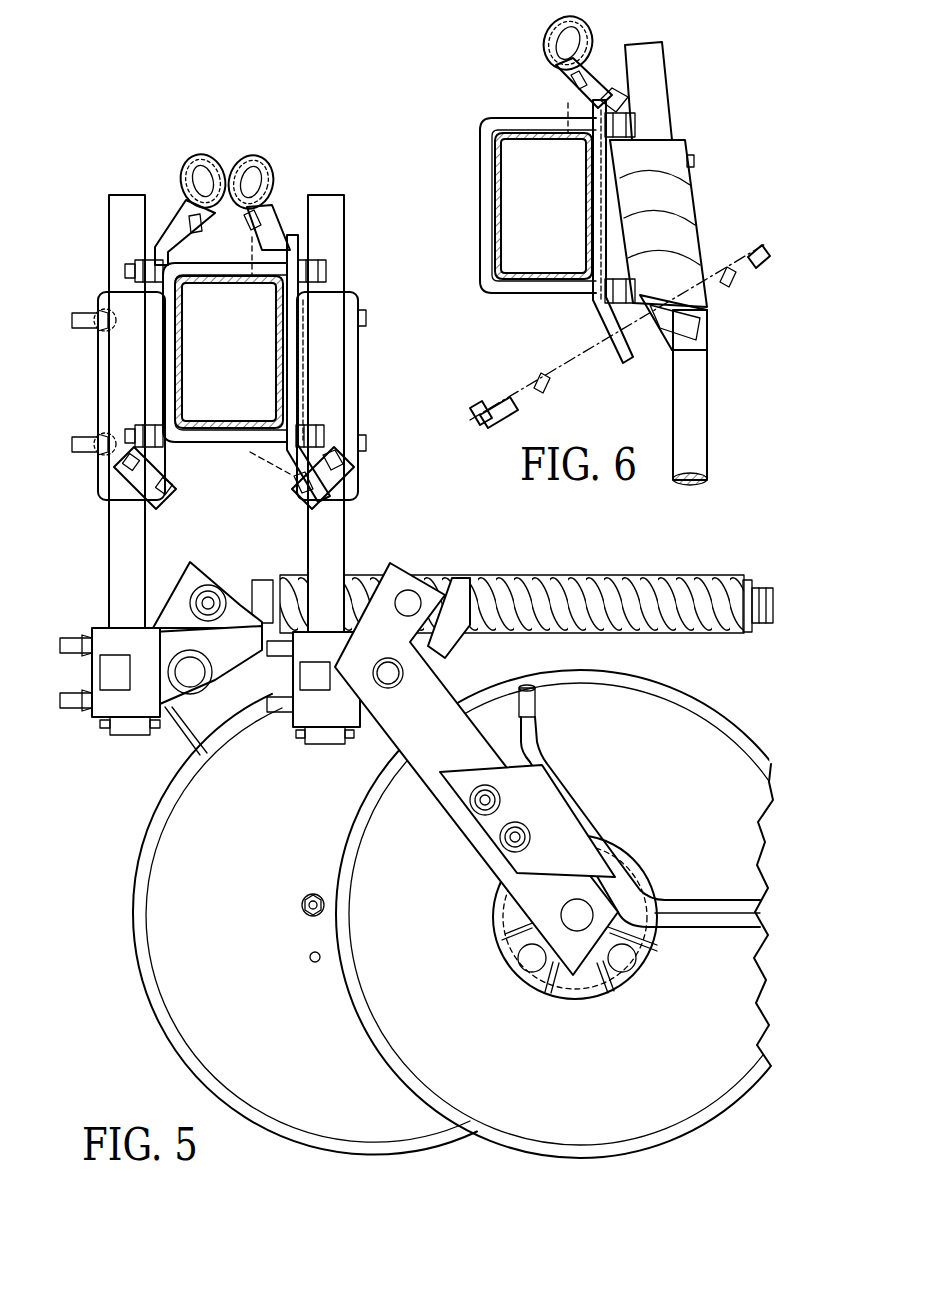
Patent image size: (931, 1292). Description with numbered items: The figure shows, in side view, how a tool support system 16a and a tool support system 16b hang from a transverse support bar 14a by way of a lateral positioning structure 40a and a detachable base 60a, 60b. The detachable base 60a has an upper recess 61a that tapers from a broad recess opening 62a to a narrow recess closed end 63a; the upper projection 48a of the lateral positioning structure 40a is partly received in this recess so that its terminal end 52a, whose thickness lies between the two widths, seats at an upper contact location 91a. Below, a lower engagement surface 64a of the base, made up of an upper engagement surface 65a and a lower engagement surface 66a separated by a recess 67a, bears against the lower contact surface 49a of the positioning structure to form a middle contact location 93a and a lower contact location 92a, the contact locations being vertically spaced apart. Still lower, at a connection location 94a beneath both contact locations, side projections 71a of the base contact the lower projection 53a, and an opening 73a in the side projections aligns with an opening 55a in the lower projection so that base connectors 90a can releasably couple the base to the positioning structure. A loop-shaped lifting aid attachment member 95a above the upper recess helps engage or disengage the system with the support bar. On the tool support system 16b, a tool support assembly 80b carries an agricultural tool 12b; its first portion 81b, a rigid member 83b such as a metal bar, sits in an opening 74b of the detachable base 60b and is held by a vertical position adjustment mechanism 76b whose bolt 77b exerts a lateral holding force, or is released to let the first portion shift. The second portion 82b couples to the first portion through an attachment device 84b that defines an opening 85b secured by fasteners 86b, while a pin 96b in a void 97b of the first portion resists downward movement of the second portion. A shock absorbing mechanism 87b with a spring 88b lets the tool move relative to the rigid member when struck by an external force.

In FIG. 5, the agricultural tool 12b is at (133, 930).
In FIG. 5, the transverse support bar 14a is at (217, 441).
In FIG. 6, the transverse support bar 14a is at (510, 294).
In FIG. 5, the tool support system 16a is at (368, 290).
In FIG. 5, the tool support system 16b is at (105, 205).
In FIG. 5, the lateral positioning structure 40a is at (248, 457).
In FIG. 6, the lateral positioning structure 40a is at (560, 101).
In FIG. 5, the upper projection 48a is at (290, 247).
In FIG. 6, the upper projection 48a is at (614, 105).
In FIG. 5, the lower contact surface 49a is at (285, 387).
In FIG. 5, the terminal end 52a is at (250, 170).
In FIG. 5, the lower projection 53a is at (285, 458).
In FIG. 6, the lower projection 53a is at (600, 310).
In FIG. 5, the opening 55a is at (310, 505).
In FIG. 6, the opening 55a is at (612, 340).
In FIG. 5, the detachable base 60a is at (366, 324).
In FIG. 6, the detachable base 60a is at (690, 158).
In FIG. 5, the detachable base 60b is at (99, 306).
In FIG. 5, the upper recess 61a is at (292, 250).
In FIG. 6, the upper recess 61a is at (628, 110).
In FIG. 5, the recess opening 62a is at (273, 237).
In FIG. 6, the recess opening 62a is at (620, 75).
In FIG. 5, the recess closed end 63a is at (262, 217).
In FIG. 6, the recess closed end 63a is at (575, 73).
In FIG. 5, the lower engagement surface 64a is at (292, 370).
In FIG. 6, the lower engagement surface 64a is at (626, 217).
In FIG. 5, the upper engagement surface 65a is at (300, 303).
In FIG. 6, the upper engagement surface 65a is at (655, 152).
In FIG. 5, the lower engagement surface 66a is at (298, 415).
In FIG. 6, the lower engagement surface 66a is at (630, 240).
In FIG. 5, the recess 67a is at (298, 350).
In FIG. 6, the recess 67a is at (622, 180).
In FIG. 5, the side projections 71a is at (345, 503).
In FIG. 6, the side projections 71a is at (699, 338).
In FIG. 5, the opening 73a is at (338, 490).
In FIG. 6, the opening 73a is at (689, 310).
In FIG. 5, the opening 74b is at (107, 512).
In FIG. 5, the vertical position adjustment mechanism 76b is at (105, 332).
In FIG. 5, the bolt 77b is at (93, 323).
In FIG. 5, the tool support assembly 80b is at (95, 600).
In FIG. 5, the first portion 81b is at (95, 540).
In FIG. 5, the second portion 82b is at (100, 634).
In FIG. 5, the rigid member 83b is at (115, 555).
In FIG. 5, the attachment device 84b is at (102, 708).
In FIG. 5, the opening 85b is at (122, 727).
In FIG. 5, the fasteners 86b is at (62, 647).
In FIG. 5, the shock absorbing mechanism 87b is at (231, 576).
In FIG. 5, the spring 88b is at (368, 574).
In FIG. 5, the base connectors 90a is at (292, 490).
In FIG. 6, the base connectors 90a is at (500, 412).
In FIG. 5, the upper contact location 91a is at (289, 228).
In FIG. 6, the upper contact location 91a is at (603, 100).
In FIG. 5, the lower contact location 92a is at (295, 407).
In FIG. 6, the lower contact location 92a is at (693, 240).
In FIG. 5, the middle contact location 93a is at (298, 316).
In FIG. 6, the middle contact location 93a is at (633, 140).
In FIG. 5, the connection location 94a is at (323, 512).
In FIG. 6, the connection location 94a is at (669, 322).
In FIG. 5, the lifting aid attachment member 95a is at (232, 158).
In FIG. 6, the lifting aid attachment member 95a is at (547, 36).
In FIG. 5, the pin 96b is at (165, 732).
In FIG. 5, the void 97b is at (155, 725).